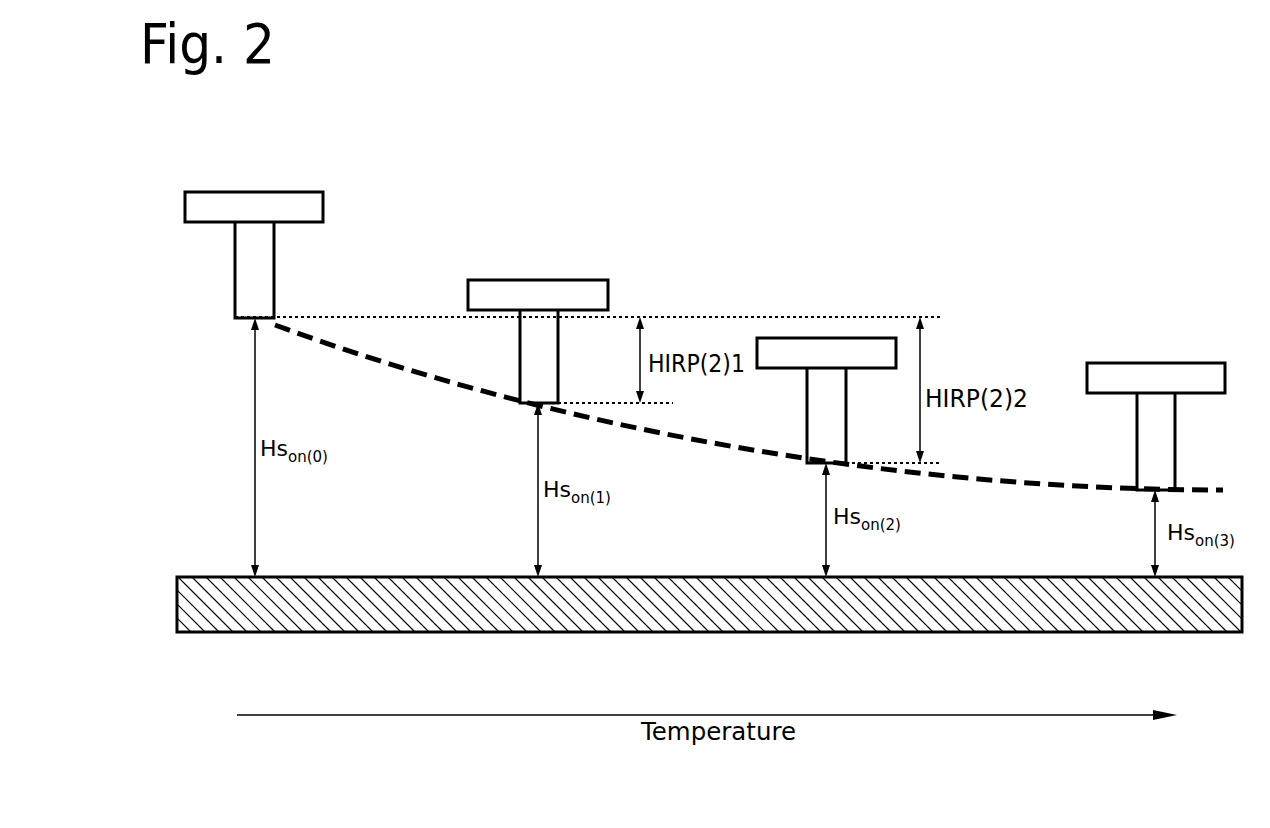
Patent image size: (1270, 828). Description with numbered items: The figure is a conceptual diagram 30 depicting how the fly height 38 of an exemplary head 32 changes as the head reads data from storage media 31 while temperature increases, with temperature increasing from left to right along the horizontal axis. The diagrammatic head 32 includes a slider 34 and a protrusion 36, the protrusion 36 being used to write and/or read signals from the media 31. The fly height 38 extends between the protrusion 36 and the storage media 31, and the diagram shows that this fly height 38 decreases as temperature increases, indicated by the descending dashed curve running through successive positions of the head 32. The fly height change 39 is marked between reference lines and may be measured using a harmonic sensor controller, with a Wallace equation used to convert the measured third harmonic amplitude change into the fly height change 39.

The conceptual diagram 30 is at (222, 208).
The storage media 31 is at (176, 603).
The head 32 is at (673, 294).
The slider 34 is at (265, 192).
The protrusion 36 is at (235, 280).
The fly height 38 is at (537, 463).
The fly height change 39 is at (640, 348).